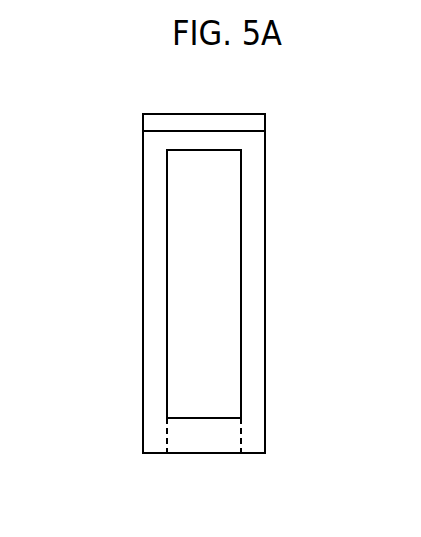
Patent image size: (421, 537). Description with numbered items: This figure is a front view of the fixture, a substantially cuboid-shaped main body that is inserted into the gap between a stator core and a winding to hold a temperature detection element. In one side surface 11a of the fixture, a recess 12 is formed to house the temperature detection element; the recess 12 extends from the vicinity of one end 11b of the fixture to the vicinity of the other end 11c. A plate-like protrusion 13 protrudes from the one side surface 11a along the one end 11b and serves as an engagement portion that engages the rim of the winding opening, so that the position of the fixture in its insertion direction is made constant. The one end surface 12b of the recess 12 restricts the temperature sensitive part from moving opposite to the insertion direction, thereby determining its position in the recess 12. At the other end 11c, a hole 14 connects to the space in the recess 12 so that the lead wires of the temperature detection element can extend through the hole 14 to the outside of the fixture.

The one side surface 11a is at (156, 182).
The one end 11b is at (176, 114).
The other end 11c is at (248, 453).
The recess 12 is at (243, 247).
The one end surface of the recess 12b is at (207, 150).
The plate-like protrusion 13 is at (257, 123).
The hole 14 is at (199, 440).